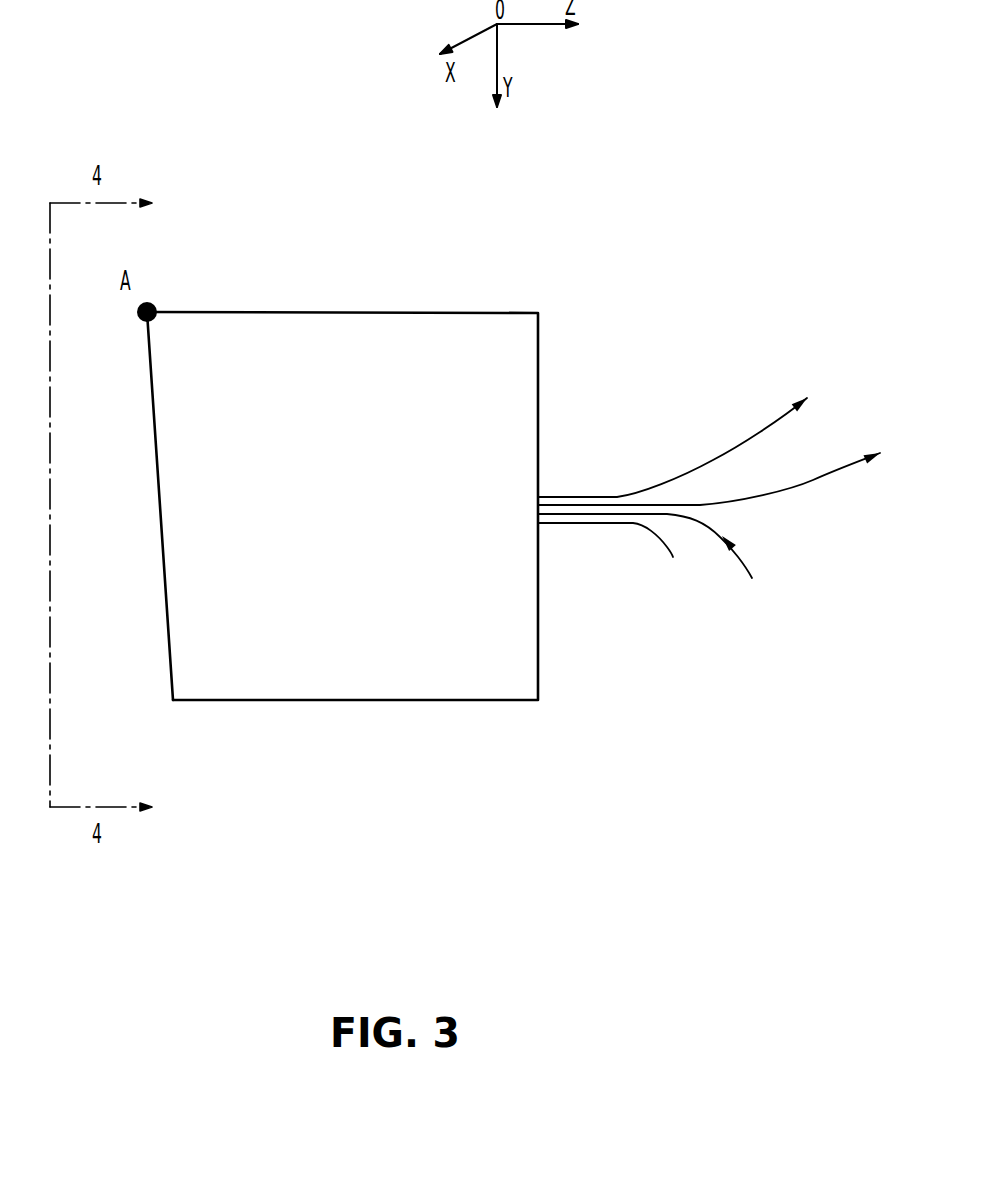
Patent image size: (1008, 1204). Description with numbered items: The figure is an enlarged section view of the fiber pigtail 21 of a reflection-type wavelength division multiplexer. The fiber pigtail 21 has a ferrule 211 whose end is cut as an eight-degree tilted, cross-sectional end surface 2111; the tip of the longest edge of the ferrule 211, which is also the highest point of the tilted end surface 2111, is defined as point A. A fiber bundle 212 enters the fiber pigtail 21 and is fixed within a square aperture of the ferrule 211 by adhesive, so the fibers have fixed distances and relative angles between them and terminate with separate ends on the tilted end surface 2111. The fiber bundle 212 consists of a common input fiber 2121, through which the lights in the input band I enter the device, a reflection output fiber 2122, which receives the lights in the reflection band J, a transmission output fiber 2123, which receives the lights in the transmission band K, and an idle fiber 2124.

The fiber pigtail 21 is at (757, 29).
The ferrule 211 is at (413, 350).
The tilted, cross-sectional end surface 2111 is at (166, 607).
The fiber bundle 212 is at (815, 253).
The common input fiber 2121 is at (752, 578).
The reflection output fiber 2122 is at (763, 432).
The transmission output fiber 2123 is at (797, 487).
The idle fiber 2124 is at (660, 540).